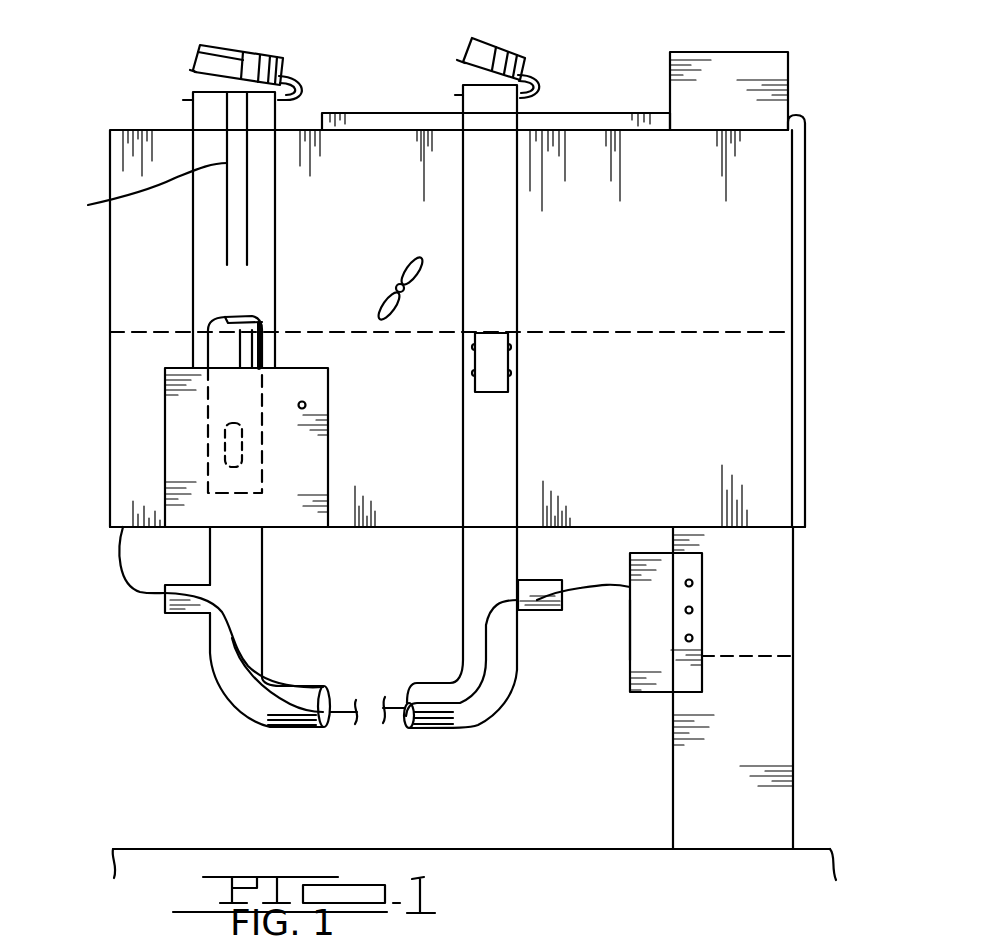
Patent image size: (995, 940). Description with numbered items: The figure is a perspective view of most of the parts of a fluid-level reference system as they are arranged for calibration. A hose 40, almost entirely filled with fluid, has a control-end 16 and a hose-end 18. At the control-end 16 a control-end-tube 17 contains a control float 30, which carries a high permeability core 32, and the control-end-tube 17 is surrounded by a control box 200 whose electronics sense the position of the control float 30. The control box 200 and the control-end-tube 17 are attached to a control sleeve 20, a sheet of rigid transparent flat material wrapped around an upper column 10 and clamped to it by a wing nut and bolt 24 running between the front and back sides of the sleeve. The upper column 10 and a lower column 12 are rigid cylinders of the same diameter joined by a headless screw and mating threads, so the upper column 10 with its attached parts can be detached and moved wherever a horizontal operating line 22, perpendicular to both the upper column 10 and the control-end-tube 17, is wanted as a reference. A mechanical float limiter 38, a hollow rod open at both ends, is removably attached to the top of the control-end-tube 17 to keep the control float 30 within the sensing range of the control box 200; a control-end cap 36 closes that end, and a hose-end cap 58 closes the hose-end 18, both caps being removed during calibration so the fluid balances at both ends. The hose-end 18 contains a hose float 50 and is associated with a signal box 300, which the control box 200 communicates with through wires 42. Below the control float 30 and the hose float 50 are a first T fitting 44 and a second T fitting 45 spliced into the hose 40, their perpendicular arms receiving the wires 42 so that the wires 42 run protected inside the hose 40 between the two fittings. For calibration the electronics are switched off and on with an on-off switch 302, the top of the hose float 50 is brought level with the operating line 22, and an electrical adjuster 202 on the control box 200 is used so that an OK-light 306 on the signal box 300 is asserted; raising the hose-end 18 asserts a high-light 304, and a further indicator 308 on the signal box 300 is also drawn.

The upper column 10 is at (763, 78).
The lower column 12 is at (772, 735).
The control-end 16 is at (262, 550).
The control-end-tube 17 is at (275, 228).
The hose-end 18 is at (463, 545).
The control sleeve 20 is at (780, 163).
The operating line 22 is at (677, 335).
The wing nut and bolt 24 is at (397, 280).
The control float 30 is at (258, 330).
The high permeability core 32 is at (222, 445).
The control-end cap 36 is at (257, 55).
The mechanical float limiter 38 is at (135, 194).
The hose 40 is at (234, 710).
The wires 42 is at (232, 640).
The first T fitting 44 is at (187, 617).
The second T fitting 45 is at (545, 610).
The hose float 50 is at (490, 370).
The hose-end cap 58 is at (520, 58).
The control box 200 is at (328, 468).
The electrical adjuster 202 is at (305, 403).
The signal box 300 is at (643, 694).
The on-off switch 302 is at (630, 660).
The high-light 304 is at (692, 582).
The OK-light 306 is at (692, 609).
The third indicator light 308 is at (692, 637).